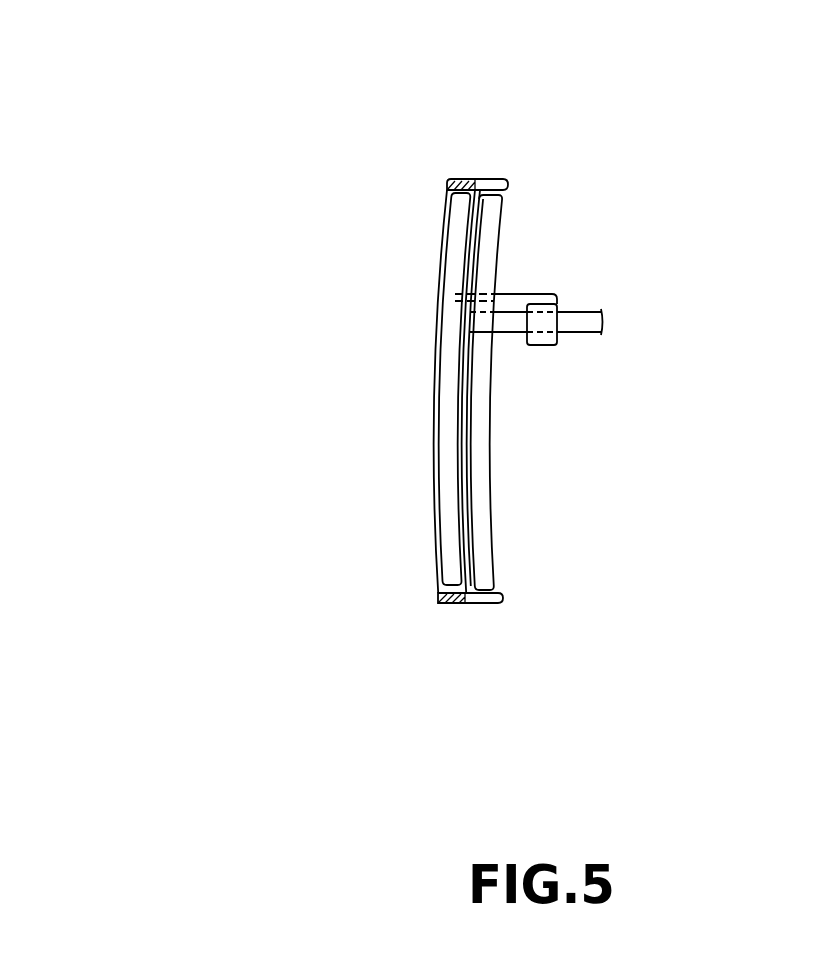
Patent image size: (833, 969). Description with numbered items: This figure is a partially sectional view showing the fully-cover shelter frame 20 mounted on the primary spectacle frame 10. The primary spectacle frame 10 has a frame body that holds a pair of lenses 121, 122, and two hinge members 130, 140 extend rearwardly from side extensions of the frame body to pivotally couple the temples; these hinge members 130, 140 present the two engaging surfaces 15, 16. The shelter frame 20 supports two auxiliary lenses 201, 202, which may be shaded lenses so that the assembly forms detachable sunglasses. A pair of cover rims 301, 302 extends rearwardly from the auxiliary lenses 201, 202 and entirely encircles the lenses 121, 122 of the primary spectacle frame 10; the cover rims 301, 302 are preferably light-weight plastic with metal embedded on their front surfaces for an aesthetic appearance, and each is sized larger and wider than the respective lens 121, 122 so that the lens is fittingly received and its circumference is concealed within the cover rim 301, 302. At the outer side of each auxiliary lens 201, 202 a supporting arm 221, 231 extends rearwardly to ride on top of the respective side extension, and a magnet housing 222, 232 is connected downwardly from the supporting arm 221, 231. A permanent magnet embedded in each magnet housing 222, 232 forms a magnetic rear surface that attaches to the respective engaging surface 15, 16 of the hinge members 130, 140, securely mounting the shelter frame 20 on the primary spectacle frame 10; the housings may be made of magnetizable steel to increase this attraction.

The primary spectacle frame 10 is at (518, 575).
The shelter frame 20 is at (407, 528).
The engaging surface 15 is at (642, 356).
The engaging surface 16 is at (560, 335).
The lens 121 is at (607, 390).
The lens 122 is at (480, 455).
The hinge member 130 is at (676, 276).
The hinge member 140 is at (577, 323).
The auxiliary lens 201 is at (297, 391).
The auxiliary lens 202 is at (448, 428).
The supporting arm 221 is at (569, 227).
The supporting arm 231 is at (517, 297).
The magnet housing 222 is at (667, 384).
The magnet housing 232 is at (540, 343).
The cover rim 301 is at (510, 387).
The cover rim 302 is at (490, 183).